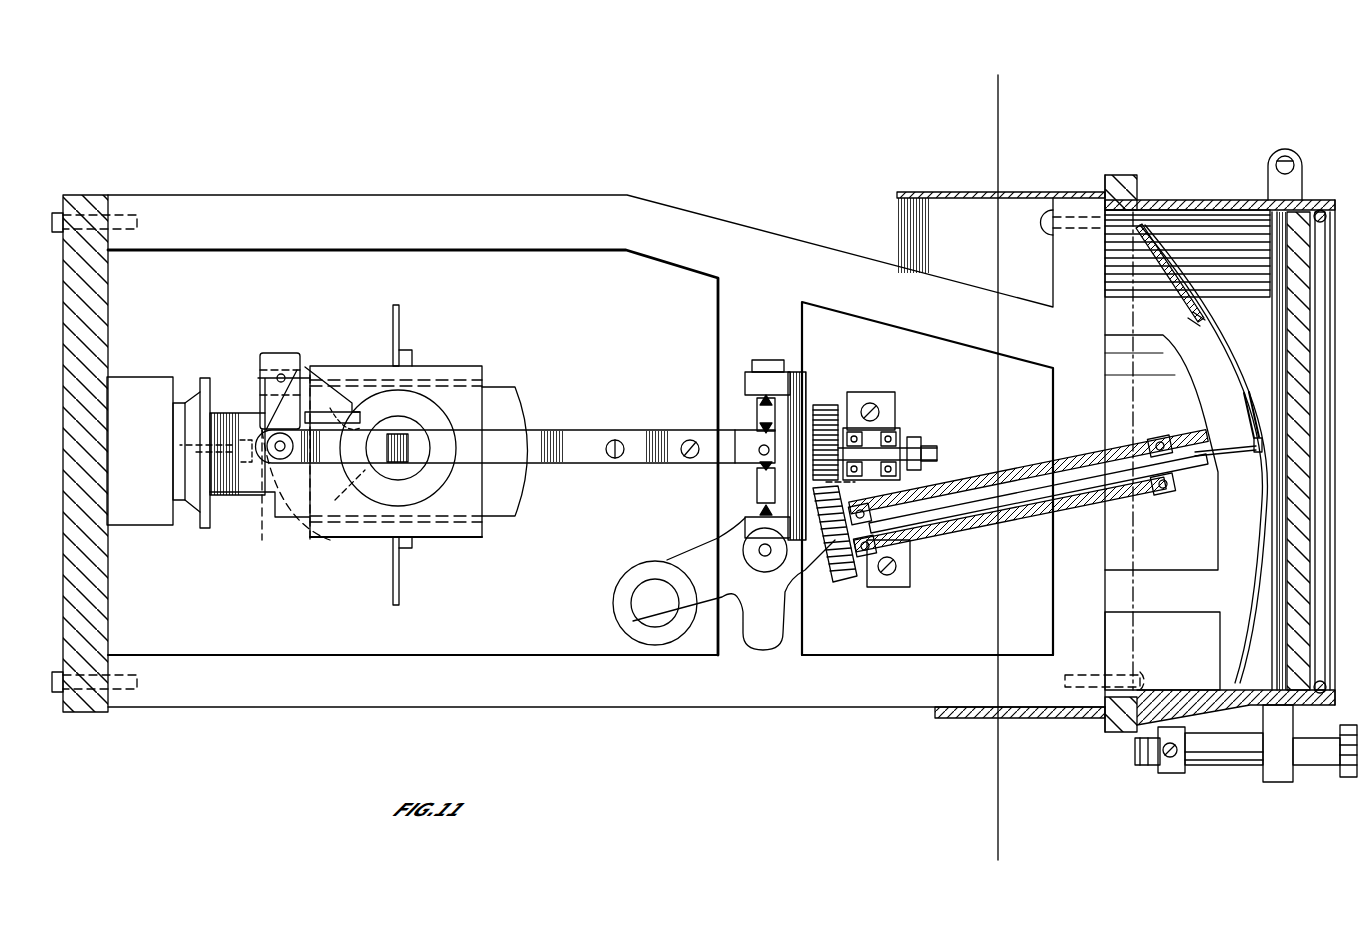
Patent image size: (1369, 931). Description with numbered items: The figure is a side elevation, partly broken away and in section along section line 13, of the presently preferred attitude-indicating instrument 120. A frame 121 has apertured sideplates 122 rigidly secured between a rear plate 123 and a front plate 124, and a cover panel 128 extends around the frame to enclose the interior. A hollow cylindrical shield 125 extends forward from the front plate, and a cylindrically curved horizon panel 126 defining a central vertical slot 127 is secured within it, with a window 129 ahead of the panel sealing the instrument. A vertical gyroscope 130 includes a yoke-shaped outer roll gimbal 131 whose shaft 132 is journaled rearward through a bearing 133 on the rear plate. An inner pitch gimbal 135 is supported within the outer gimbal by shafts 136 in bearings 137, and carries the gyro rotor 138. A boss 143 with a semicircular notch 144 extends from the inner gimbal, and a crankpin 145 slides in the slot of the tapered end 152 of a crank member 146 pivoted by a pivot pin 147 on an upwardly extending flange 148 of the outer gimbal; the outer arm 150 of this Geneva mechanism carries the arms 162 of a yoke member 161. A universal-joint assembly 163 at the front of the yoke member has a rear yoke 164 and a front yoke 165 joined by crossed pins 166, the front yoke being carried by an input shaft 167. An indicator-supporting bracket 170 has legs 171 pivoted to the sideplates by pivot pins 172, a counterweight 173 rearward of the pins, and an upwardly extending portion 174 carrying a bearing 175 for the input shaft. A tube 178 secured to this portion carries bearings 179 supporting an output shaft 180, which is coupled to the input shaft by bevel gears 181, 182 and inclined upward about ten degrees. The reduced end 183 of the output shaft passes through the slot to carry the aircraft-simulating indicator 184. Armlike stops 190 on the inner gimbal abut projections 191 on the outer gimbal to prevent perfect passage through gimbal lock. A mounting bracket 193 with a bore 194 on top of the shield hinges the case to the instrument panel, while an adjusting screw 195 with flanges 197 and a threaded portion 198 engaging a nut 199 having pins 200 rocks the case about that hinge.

The section line 13- 13 is at (1002, 68).
The attitude-indicating instrument 120 is at (858, 186).
The frame 121 is at (718, 712).
The sideplates 122 is at (232, 700).
The rear plate 123 is at (108, 630).
The front plate 124 is at (1112, 175).
The shield 125 is at (1222, 205).
The horizon panel 126 is at (1172, 265).
The slot 127 is at (1218, 335).
The cover panel 128 is at (940, 190).
The window 129 is at (1318, 215).
The vertical gyroscope 130 is at (550, 335).
The outer roll gimbal 131 is at (250, 505).
The shaft 132 is at (182, 512).
The bearing 133 is at (137, 528).
The inner pitch gimbal 135 is at (485, 395).
The shafts 136 is at (455, 480).
The bearings 137 is at (400, 430).
The gyro rotor 138 is at (530, 400).
The boss 143 is at (440, 520).
The notch 144 is at (375, 412).
The crankpin 145 is at (380, 457).
The crank member 146 is at (270, 350).
The pivot pin 147 is at (281, 386).
The flange 148 is at (255, 370).
The outer arm 150 is at (310, 385).
The end 152 is at (352, 404).
The yoke member 161 is at (582, 432).
The arms 162 is at (525, 459).
The universal-joint assembly 163 is at (738, 404).
The rear yoke 164 is at (738, 468).
The front yoke 165 is at (805, 380).
The pins 166 is at (752, 420).
The input shaft 167 is at (930, 455).
The indicator-supporting bracket 170 is at (806, 600).
The legs 171 is at (688, 562).
The pivot pins 172 is at (760, 554).
The counterweight 173 is at (613, 608).
The upwardly extending portion 174 is at (893, 398).
The bearing 175 is at (905, 432).
The tube 178 is at (985, 528).
The bearings 179 is at (882, 587).
The output shaft 180 is at (1030, 500).
The bevel gear 181 is at (830, 405).
The bevel gear 182 is at (845, 575).
The end 183 is at (1224, 440).
The indicator 184 is at (1250, 395).
The stops 190 is at (400, 325).
The projections 191 is at (180, 448).
The mounting bracket 193 is at (1268, 178).
The bore 194 is at (1287, 152).
The adjusting screw 195 is at (1325, 752).
The flanges 197 is at (1263, 775).
The threaded portion 198 is at (1135, 750).
The nut 199 is at (1180, 773).
The pins 200 is at (1168, 757).